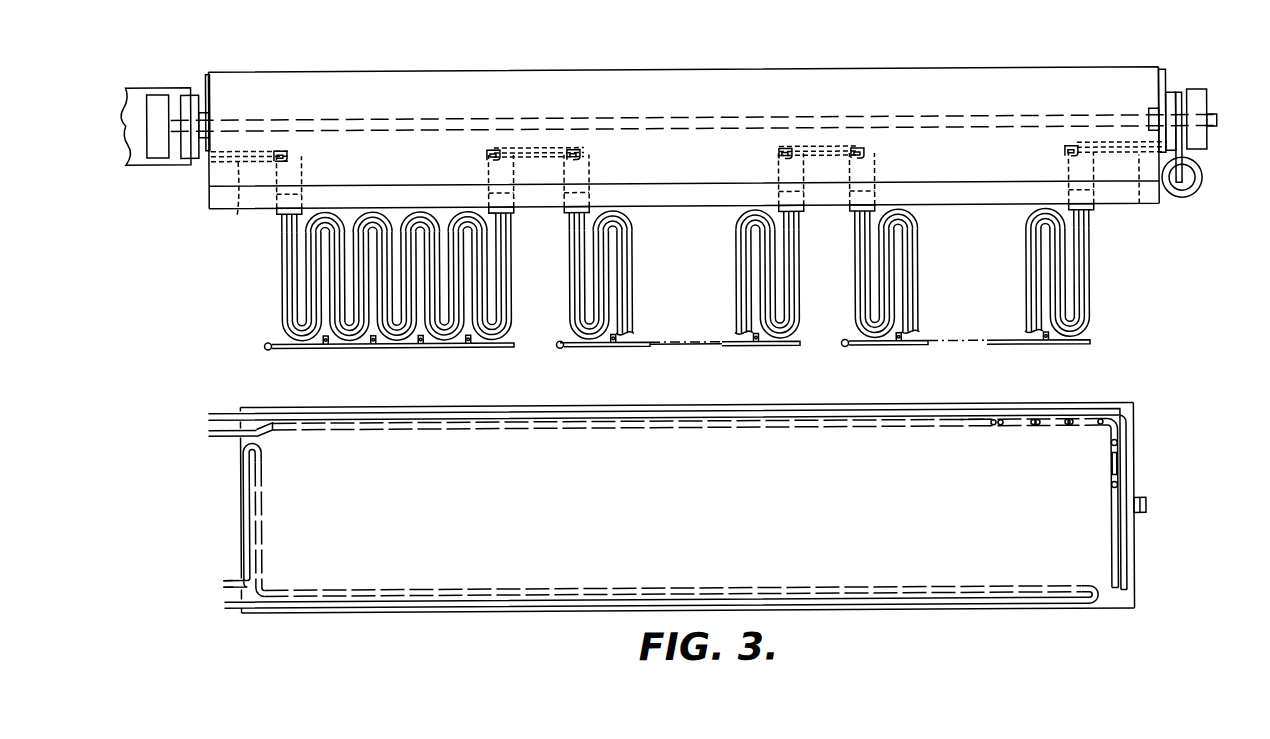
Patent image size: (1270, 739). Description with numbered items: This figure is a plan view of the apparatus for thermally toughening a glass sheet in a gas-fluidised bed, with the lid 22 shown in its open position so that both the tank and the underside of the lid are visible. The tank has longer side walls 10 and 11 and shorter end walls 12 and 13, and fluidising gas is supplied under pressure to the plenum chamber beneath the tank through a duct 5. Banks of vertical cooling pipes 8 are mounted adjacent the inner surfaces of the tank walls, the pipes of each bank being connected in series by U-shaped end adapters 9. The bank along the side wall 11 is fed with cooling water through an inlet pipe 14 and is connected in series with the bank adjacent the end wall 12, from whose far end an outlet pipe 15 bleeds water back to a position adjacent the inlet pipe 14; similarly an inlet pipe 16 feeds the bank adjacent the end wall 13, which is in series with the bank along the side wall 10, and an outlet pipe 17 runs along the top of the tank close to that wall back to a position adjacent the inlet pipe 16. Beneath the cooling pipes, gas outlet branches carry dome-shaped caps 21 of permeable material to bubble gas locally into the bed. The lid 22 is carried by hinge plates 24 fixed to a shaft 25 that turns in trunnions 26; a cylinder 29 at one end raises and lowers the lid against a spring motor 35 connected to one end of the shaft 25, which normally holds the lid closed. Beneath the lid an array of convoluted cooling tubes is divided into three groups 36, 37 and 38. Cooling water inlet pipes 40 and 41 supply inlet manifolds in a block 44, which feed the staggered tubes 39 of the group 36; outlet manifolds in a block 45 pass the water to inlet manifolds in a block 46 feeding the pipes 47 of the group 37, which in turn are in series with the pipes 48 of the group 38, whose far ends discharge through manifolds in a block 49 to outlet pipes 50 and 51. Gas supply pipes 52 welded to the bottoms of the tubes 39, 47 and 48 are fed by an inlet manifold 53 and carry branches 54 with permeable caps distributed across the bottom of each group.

The duct 5 is at (1148, 505).
The vertical cooling pipes 8 is at (966, 430).
The U-shaped end adapters 9 is at (765, 588).
The side wall 10 is at (395, 611).
The side wall 11 is at (950, 405).
The end wall 12 is at (1137, 454).
The end wall 13 is at (240, 467).
The inlet pipe 14 is at (208, 431).
The outlet pipe 15 is at (208, 412).
The inlet pipe 16 is at (222, 582).
The outlet pipe 17 is at (223, 603).
The dome-shaped cap 21 is at (995, 428).
The lid 22 is at (352, 77).
The hinge plates 24 is at (207, 77).
The shaft 25 is at (455, 117).
The trunnions 26 is at (191, 154).
The cylinder 29 is at (1202, 188).
The spring motor 35 is at (159, 99).
The group of cooling pipes 36 is at (371, 303).
The group of cooling pipes 37 is at (672, 349).
The group of cooling pipes 38 is at (1033, 349).
The convoluted tubes 39 is at (305, 290).
The cooling water inlet pipe 40 is at (236, 212).
The cooling water inlet pipe 41 is at (286, 151).
The block 44 is at (302, 178).
The block 45 is at (489, 171).
The block 46 is at (590, 173).
The convoluted cooling pipes 47 is at (789, 300).
The pipes 48 is at (1039, 290).
The block 49 is at (1070, 167).
The cooling water outlet pipe 50 is at (1082, 153).
The cooling water outlet pipe 51 is at (1138, 206).
The gas supply pipes 52 is at (462, 347).
The inlet manifold 53 is at (268, 347).
The branches 54 is at (421, 347).